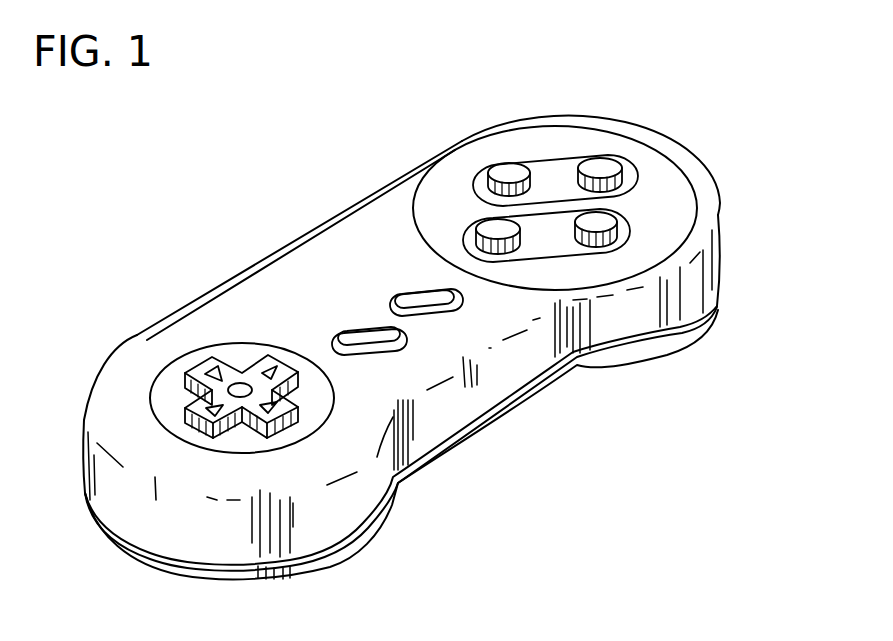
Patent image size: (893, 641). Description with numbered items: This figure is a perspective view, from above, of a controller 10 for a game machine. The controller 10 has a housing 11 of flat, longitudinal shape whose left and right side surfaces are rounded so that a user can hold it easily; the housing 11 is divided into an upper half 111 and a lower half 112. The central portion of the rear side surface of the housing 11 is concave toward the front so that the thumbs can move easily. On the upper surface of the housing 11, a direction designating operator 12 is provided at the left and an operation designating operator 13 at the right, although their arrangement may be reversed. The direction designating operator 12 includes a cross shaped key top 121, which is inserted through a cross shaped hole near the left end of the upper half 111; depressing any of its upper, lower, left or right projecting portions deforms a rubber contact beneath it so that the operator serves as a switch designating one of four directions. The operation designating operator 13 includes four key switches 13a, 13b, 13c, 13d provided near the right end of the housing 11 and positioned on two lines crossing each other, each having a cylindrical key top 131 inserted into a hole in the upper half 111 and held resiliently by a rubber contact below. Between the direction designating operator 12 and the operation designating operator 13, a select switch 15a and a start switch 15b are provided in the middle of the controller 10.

The controller 10 is at (456, 292).
The housing 11 is at (456, 347).
The upper half 111 is at (720, 212).
The lower half 112 is at (440, 414).
The direction designating operator 12 is at (215, 345).
The cross shaped key top 121 is at (188, 368).
The operation designating operator 13 is at (559, 133).
The key switch 13a is at (510, 151).
The key switch 13b is at (608, 153).
The key switch 13c is at (530, 226).
The key switch 13d is at (651, 152).
The cylindrical key top 131 is at (546, 203).
The select switch 15a is at (390, 351).
The start switch 15b is at (443, 315).